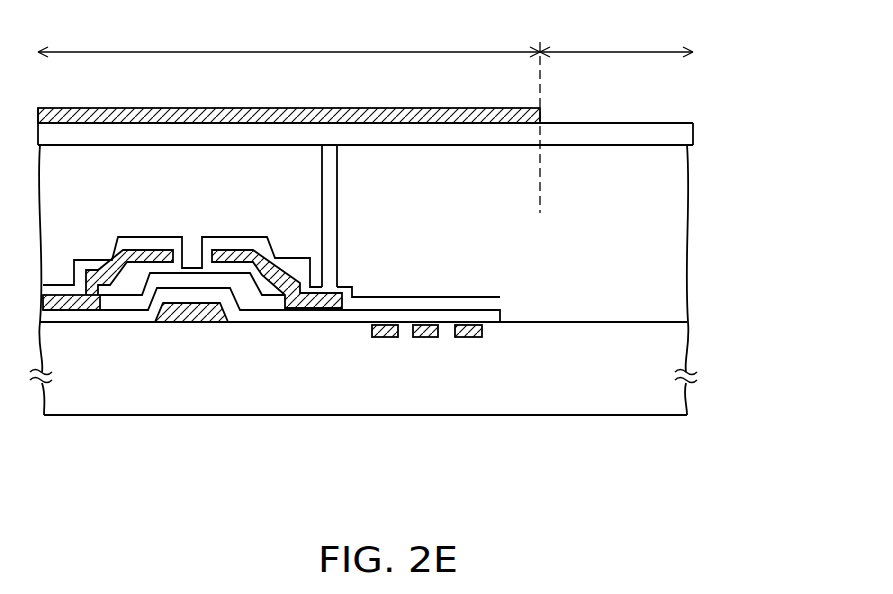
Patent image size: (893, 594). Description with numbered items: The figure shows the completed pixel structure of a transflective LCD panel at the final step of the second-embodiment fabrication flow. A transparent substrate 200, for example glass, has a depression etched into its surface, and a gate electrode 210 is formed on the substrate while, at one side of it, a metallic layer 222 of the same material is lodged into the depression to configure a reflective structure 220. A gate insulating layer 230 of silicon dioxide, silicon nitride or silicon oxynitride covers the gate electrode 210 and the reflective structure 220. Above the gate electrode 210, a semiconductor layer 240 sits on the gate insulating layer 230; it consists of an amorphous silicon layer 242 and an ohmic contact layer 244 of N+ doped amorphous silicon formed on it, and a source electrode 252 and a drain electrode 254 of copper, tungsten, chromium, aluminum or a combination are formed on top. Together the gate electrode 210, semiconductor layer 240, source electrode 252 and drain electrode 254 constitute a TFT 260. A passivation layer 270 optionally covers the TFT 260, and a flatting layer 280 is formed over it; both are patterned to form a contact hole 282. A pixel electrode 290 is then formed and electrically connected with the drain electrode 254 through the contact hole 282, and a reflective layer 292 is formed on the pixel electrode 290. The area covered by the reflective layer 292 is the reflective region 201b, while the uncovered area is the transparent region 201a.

The transparent substrate 200 is at (685, 340).
The transparent region 201a is at (616, 113).
The reflective region 201b is at (289, 35).
The gate electrode 210 is at (173, 326).
The reflective structure 220 is at (482, 283).
The metallic layer 222 is at (380, 338).
The gate insulating layer 230 is at (68, 318).
The semiconductor layer 240 is at (219, 379).
The amorphous silicon layer 242 is at (257, 262).
The ohmic contact layer 244 is at (302, 292).
The source electrode 252 is at (150, 326).
The drain electrode 254 is at (222, 264).
The TFT 260 is at (315, 503).
The passivation layer 270 is at (150, 250).
The flatting layer 280 is at (680, 195).
The contact hole 282 is at (328, 266).
The pixel electrode 290 is at (690, 133).
The reflective layer 292 is at (510, 108).